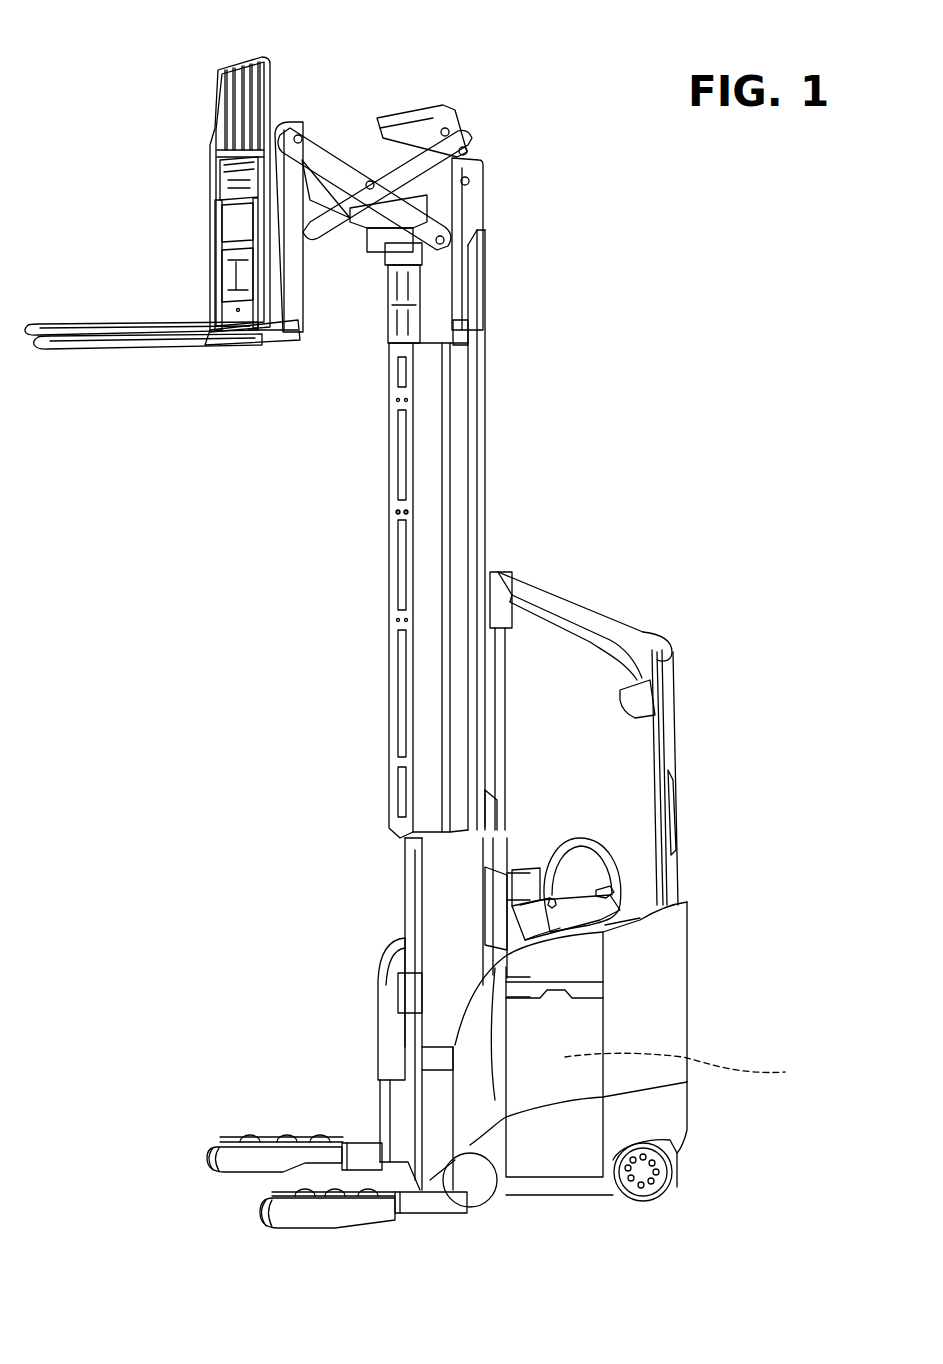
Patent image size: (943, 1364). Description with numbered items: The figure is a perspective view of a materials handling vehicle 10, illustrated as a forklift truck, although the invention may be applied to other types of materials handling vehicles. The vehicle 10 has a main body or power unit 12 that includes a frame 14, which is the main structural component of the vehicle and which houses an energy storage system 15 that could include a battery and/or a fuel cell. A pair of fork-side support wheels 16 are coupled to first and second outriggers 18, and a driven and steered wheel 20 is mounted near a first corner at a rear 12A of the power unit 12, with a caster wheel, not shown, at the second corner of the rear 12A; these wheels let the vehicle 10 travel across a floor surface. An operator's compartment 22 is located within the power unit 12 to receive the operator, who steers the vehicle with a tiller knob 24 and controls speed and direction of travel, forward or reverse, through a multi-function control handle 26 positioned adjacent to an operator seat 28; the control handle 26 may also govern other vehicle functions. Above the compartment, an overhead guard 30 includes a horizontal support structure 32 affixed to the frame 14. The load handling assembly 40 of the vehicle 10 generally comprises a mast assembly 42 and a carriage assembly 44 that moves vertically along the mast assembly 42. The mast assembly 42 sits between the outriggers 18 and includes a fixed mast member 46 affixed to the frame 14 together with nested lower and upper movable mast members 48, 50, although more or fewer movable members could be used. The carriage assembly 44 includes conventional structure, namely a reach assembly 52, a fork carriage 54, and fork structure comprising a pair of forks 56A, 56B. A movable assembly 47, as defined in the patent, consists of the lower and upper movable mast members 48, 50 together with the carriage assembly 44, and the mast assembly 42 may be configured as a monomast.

The materials handling vehicle 10 is at (708, 315).
The power unit 12 is at (718, 944).
The rear of the power unit 12A is at (705, 1110).
The frame 14 is at (672, 1024).
The energy storage system 15 is at (689, 1067).
The fork-side support wheels 16 is at (258, 1138).
The outriggers 18 is at (232, 1169).
The driven and steered wheel 20 is at (655, 1187).
The operator's compartment 22 is at (590, 676).
The tiller knob 24 is at (598, 905).
The multi-function control handle 26 is at (560, 895).
The operator seat 28 is at (578, 860).
The overhead guard 30 is at (585, 609).
The horizontal support structure 32 is at (678, 750).
The load handling assembly 40 is at (226, 502).
The mast assembly 42 is at (388, 662).
The carriage assembly 44 is at (298, 108).
The fixed mast member 46 is at (417, 1065).
The movable assembly 47 is at (490, 392).
The lower movable mast member 48 is at (430, 914).
The upper movable mast member 50 is at (396, 513).
The reach assembly 52 is at (344, 246).
The fork carriage 54 is at (197, 230).
The fork 56A is at (136, 352).
The fork 56B is at (47, 325).